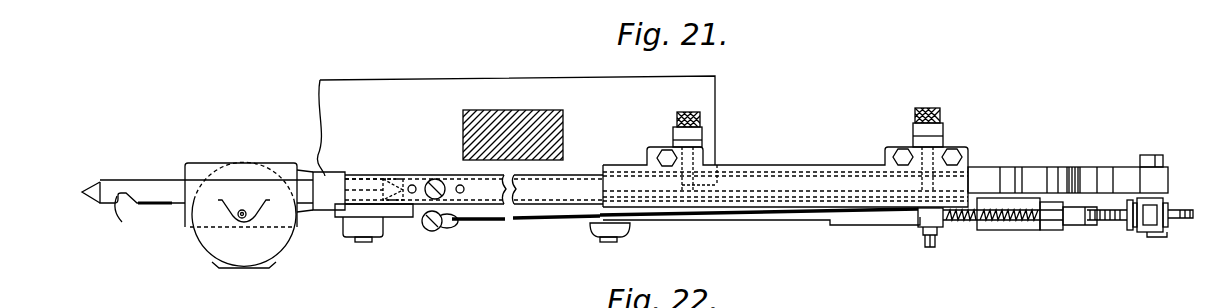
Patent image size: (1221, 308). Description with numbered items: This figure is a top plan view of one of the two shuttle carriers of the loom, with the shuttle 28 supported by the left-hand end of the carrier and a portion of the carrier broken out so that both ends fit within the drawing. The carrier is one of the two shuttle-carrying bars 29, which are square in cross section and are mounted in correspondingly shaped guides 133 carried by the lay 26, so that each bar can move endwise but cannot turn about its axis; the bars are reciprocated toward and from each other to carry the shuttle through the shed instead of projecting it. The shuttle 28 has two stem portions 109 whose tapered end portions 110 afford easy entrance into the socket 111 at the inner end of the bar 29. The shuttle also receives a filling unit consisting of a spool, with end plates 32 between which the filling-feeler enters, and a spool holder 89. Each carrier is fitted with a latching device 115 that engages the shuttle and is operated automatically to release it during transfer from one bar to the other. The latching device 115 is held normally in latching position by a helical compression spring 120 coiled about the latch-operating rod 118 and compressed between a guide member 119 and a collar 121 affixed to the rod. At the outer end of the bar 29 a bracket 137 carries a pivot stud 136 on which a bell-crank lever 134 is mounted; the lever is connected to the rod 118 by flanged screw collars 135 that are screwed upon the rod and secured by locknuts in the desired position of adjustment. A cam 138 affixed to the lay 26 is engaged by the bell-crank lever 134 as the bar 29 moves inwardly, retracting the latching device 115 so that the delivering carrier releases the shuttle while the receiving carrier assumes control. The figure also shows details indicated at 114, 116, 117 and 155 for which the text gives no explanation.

The lay 26 is at (483, 88).
The shuttle 28 is at (200, 168).
The shuttle-carrying bar 29 is at (591, 170).
The end plate of the operating spool 32 is at (211, 241).
The spool holder 89 is at (222, 268).
The stem portion 109 is at (130, 185).
The end portion 110 is at (83, 191).
The socket 111 is at (357, 175).
The notch finger 114 is at (124, 210).
The latching device 115 is at (367, 192).
The clamp screw 116 is at (433, 180).
The adjusting screw 117 is at (445, 208).
The latch-operating rod 118 is at (707, 216).
The guide member 119 is at (1048, 232).
The helical compression spring 120 is at (1000, 231).
The collar 121 is at (920, 229).
The guide 133 is at (771, 163).
The bell-crank lever 134 is at (1148, 196).
The flanged screw collar 135 is at (1135, 222).
The pivot stud 136 is at (1152, 234).
The bracket 137 is at (1113, 203).
The cam 138 is at (1078, 198).
The collar 155 is at (1164, 228).